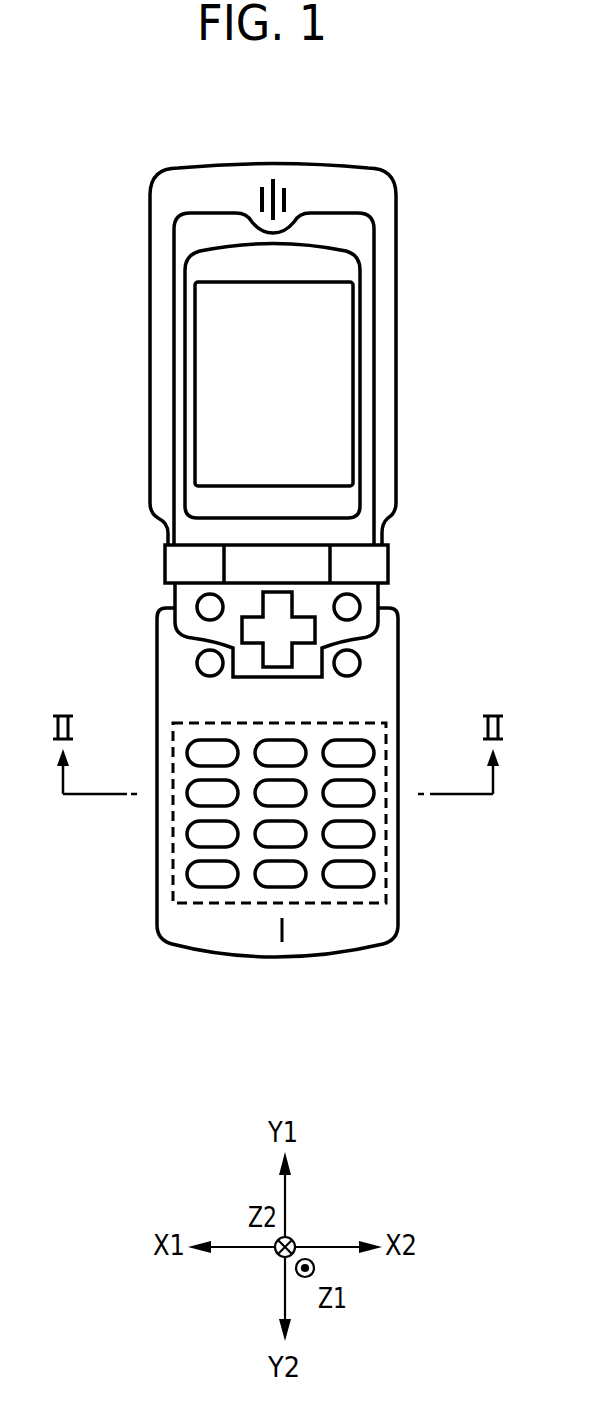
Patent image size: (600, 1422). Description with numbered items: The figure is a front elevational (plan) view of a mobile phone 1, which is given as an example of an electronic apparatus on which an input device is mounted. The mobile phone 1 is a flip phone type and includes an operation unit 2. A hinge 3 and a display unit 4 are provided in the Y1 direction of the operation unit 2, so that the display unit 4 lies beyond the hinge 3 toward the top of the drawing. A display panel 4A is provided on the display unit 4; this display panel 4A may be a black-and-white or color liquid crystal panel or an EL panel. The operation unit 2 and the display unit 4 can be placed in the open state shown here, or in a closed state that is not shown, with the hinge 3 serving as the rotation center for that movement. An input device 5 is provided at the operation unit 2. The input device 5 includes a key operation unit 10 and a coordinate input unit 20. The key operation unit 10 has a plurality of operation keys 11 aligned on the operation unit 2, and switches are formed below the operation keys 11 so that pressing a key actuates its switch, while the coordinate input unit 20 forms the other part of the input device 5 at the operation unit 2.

The mobile phone 1 is at (104, 152).
The operation unit 2 is at (355, 711).
The hinge 3 is at (388, 563).
The display unit 4 is at (384, 295).
The display panel 4A is at (337, 363).
The input device 5 is at (503, 920).
The key operation unit 10 is at (364, 896).
The operation keys 11 is at (272, 887).
The coordinate input unit 20 is at (354, 914).